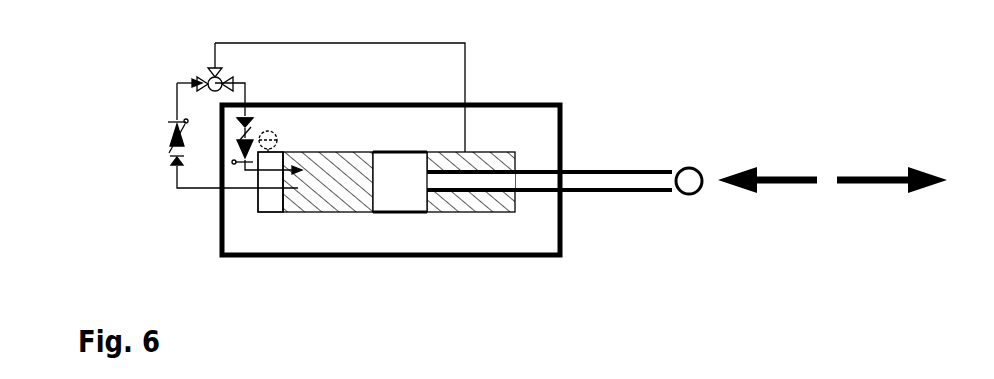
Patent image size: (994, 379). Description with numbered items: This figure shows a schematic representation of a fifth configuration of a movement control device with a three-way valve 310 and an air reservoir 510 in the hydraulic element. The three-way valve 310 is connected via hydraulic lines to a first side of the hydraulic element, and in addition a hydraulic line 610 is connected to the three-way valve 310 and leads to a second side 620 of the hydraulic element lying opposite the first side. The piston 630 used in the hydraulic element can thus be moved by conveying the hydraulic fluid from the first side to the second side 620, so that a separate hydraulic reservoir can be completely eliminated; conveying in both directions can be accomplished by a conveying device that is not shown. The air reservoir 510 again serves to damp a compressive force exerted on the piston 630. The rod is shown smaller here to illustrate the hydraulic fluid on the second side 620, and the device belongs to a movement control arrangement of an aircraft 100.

The three-way valve 310 is at (183, 70).
The air reservoir 510 is at (262, 206).
The hydraulic line 610 is at (470, 52).
The second side 620 is at (500, 153).
The piston 630 is at (393, 202).
The aircraft 100 is at (796, 248).